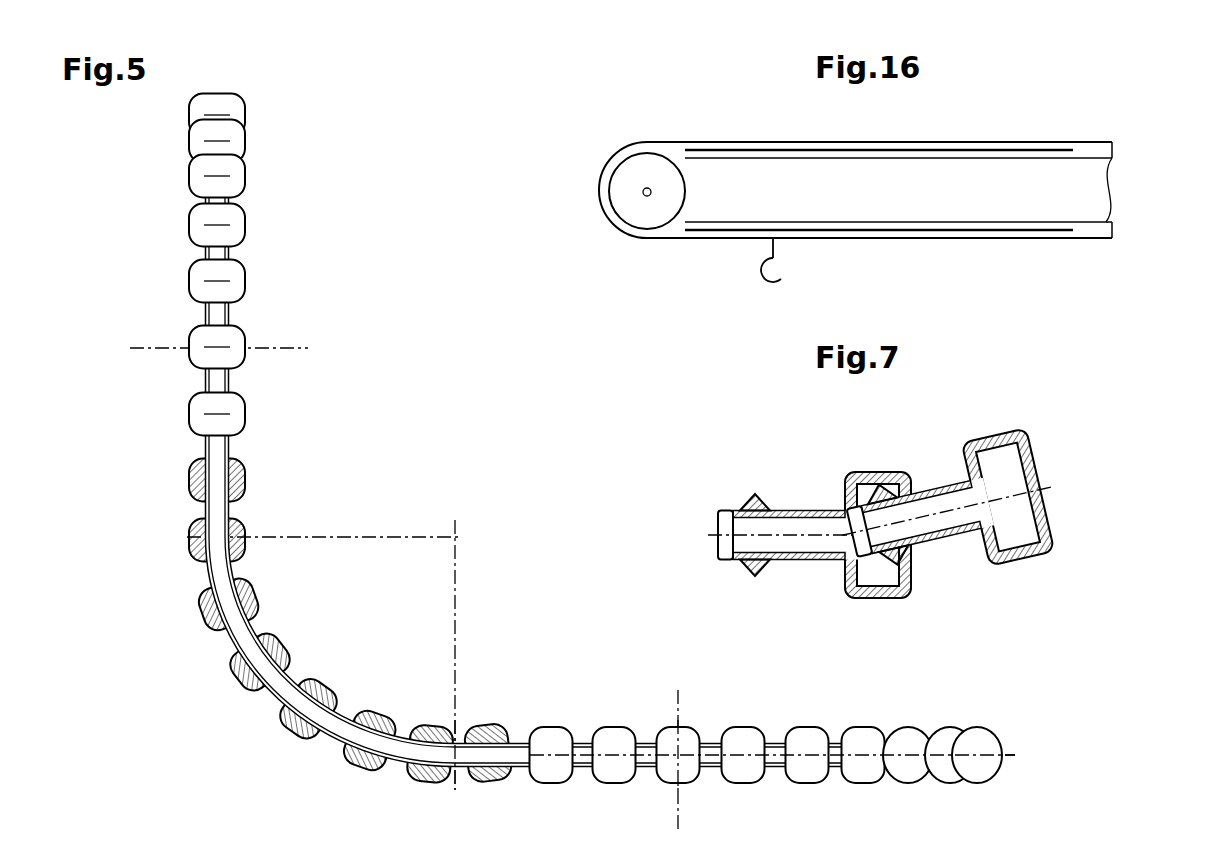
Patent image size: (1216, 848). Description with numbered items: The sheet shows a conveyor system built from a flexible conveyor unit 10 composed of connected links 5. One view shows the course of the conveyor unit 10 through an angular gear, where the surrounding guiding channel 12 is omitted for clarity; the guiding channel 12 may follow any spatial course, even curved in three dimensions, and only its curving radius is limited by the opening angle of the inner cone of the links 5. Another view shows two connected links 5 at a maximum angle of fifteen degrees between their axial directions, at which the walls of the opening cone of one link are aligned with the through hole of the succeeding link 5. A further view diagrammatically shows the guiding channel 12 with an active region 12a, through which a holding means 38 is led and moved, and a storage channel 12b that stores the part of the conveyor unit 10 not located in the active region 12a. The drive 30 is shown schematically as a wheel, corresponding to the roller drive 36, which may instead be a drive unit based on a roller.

In FIG. 5, the link 5 is at (215, 677).
In FIG. 7, the link 5 is at (820, 480).
In FIG. 5, the conveyor unit 10 is at (350, 437).
In FIG. 16, the conveyor unit 10 is at (660, 138).
In FIG. 16, the guiding channel 12 is at (952, 141).
In FIG. 16, the active region 12a is at (1108, 221).
In FIG. 16, the storage channel 12b is at (1098, 141).
In FIG. 16, the drive 30 is at (622, 178).
In FIG. 16, the roller drive 36 is at (647, 191).
In FIG. 16, the holding means 38 is at (758, 271).